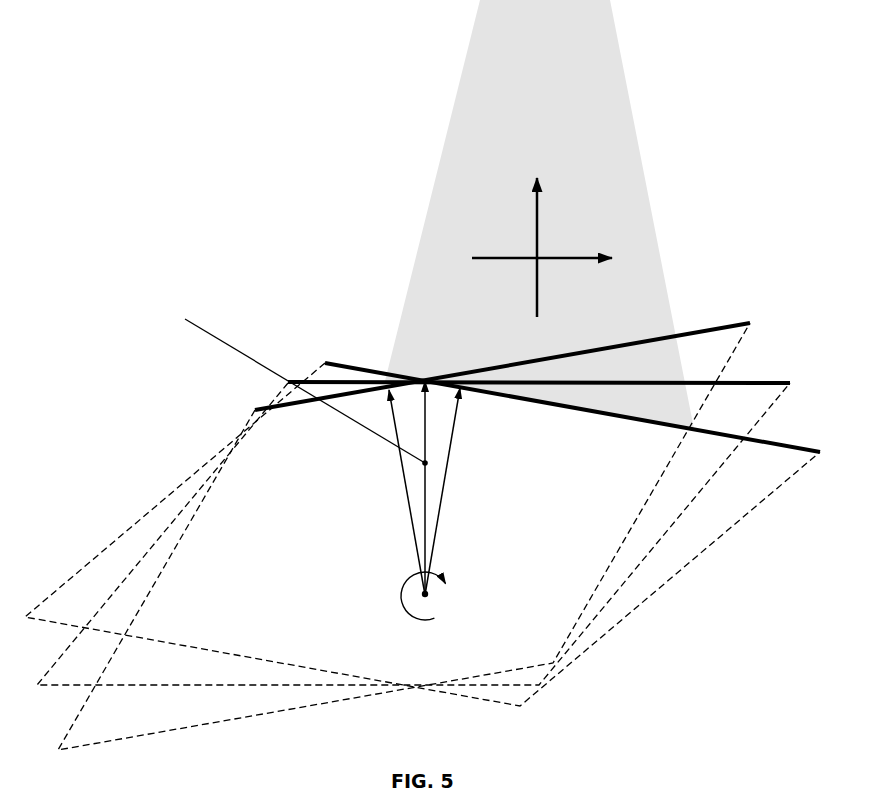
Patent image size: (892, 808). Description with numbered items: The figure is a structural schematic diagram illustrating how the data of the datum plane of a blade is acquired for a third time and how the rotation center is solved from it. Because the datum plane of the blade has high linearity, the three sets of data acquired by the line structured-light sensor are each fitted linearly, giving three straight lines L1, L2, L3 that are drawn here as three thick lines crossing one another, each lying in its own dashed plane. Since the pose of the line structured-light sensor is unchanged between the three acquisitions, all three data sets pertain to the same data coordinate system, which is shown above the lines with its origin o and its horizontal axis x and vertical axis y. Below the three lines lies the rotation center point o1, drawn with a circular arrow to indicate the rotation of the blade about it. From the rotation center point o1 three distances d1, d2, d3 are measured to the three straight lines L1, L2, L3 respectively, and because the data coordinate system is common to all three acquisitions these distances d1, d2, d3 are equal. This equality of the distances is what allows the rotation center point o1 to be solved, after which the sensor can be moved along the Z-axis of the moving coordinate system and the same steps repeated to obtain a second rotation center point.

The first straight line L1 is at (404, 530).
The second straight line L2 is at (413, 519).
The third straight line L3 is at (422, 534).
The distance to first straight line d1 is at (395, 488).
The distance to second straight line d2 is at (285, 385).
The distance to third straight line d3 is at (455, 491).
The rotation center point o1 is at (447, 596).
The data coordinate system origin o is at (521, 275).
The x-axis of data coordinate system x is at (550, 240).
The y-axis of data coordinate system y is at (518, 235).